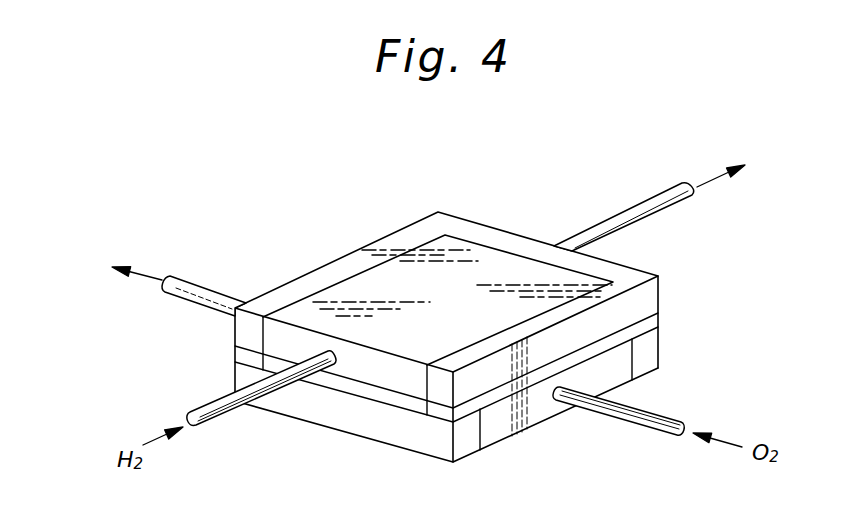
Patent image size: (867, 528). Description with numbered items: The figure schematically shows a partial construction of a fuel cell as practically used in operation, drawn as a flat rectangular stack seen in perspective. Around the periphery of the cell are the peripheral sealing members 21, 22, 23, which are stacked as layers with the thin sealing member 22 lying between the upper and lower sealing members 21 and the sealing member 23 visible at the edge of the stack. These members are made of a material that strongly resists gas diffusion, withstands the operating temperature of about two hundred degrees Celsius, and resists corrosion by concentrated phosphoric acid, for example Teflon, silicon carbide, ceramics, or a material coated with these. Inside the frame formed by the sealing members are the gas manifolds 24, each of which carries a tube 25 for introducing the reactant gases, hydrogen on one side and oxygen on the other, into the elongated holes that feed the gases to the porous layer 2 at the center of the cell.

The porous layer 2 is at (378, 278).
The peripheral sealing member 21 is at (442, 217).
The peripheral sealing member 22 is at (652, 322).
The peripheral sealing member 23 is at (392, 398).
The gas manifold 24 is at (508, 240).
The tube 25 is at (207, 287).